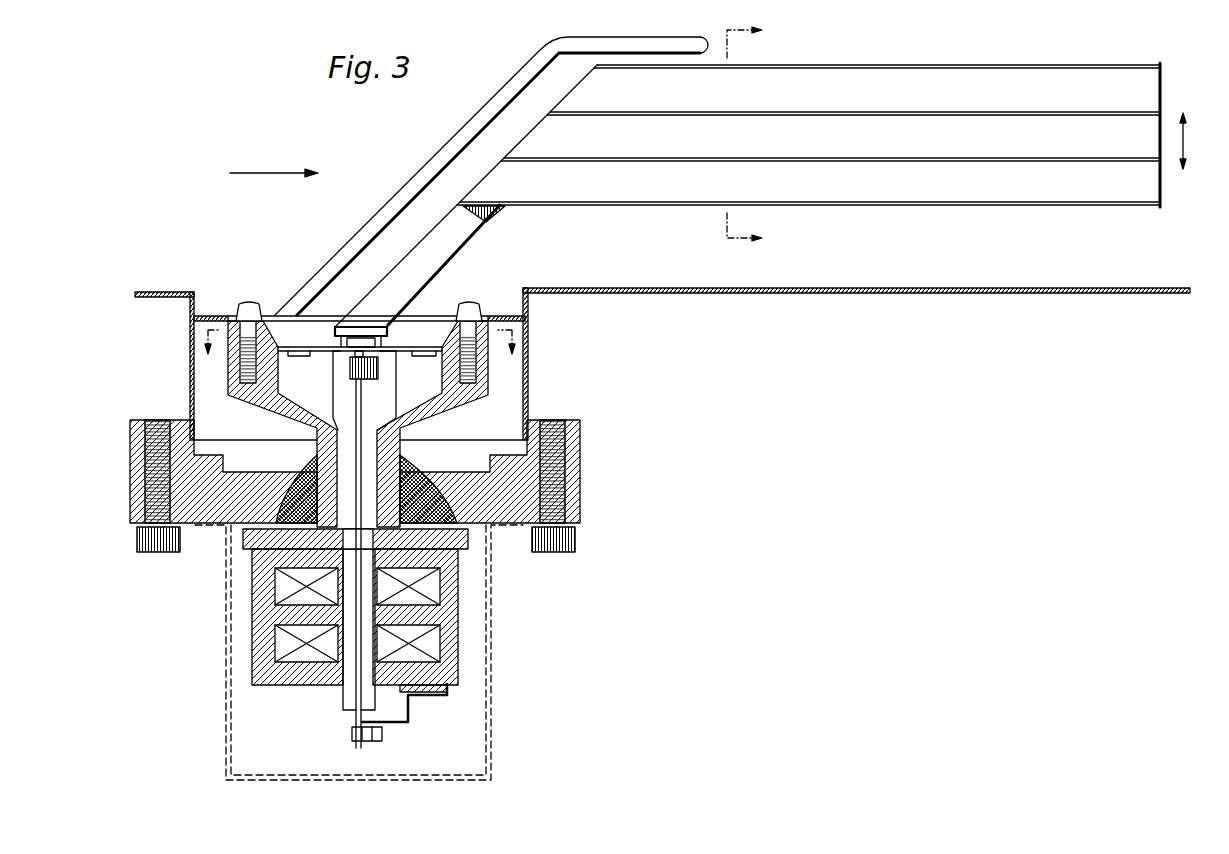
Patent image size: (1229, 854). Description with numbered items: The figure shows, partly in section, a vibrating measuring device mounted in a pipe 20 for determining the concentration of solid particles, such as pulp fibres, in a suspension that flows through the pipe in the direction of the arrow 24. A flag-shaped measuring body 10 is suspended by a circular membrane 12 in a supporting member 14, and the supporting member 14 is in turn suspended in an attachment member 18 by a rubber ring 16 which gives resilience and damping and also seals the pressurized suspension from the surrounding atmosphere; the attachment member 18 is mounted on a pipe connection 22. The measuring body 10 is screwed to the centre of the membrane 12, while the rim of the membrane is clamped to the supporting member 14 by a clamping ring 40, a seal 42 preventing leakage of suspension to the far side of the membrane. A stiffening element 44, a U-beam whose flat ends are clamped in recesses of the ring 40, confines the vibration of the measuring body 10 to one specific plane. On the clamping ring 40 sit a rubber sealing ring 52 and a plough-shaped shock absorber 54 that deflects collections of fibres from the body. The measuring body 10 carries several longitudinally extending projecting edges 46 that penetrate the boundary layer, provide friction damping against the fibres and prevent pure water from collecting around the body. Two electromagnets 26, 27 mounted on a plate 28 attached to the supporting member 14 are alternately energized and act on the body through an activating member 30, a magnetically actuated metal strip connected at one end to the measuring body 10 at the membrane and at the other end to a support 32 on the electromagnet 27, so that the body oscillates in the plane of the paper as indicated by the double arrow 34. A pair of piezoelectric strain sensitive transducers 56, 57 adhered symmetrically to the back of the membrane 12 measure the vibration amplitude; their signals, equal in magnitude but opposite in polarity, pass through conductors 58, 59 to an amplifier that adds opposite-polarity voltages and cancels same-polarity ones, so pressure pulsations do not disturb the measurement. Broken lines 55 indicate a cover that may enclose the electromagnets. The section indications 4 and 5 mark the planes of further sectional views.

The measuring body 10 is at (1025, 184).
The projecting edges 46 is at (887, 64).
The double arrow 34 is at (1186, 140).
The shock absorber 54 is at (420, 192).
The arrow 24 is at (286, 172).
The section line 5- 5 is at (752, 137).
The pipe 20 is at (712, 293).
The pipe connection 22 is at (528, 398).
The sealing ring 52 is at (210, 315).
The membrane 12 is at (295, 350).
The stiffening element 44 is at (348, 333).
The clamping ring 40 is at (455, 318).
The section line 4- 4 is at (358, 355).
The piezoelectric strain sensitive transducer 56 is at (300, 357).
The seal 42 is at (425, 357).
The piezoelectric strain sensitive transducer 57 is at (378, 358).
The conductor 58 is at (331, 378).
The conductor 59 is at (396, 386).
The supporting member 14 is at (443, 413).
The rubber ring 16 is at (295, 470).
The attachment member 18 is at (235, 502).
The plate 28 is at (460, 540).
The electromagnet 26 is at (313, 673).
The electromagnet 27 is at (452, 687).
The activating member 30 is at (360, 695).
The support 32 is at (393, 713).
The cover 55 is at (225, 698).